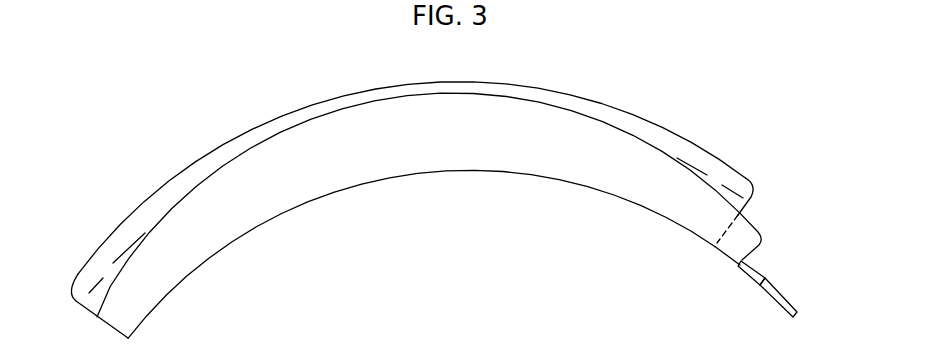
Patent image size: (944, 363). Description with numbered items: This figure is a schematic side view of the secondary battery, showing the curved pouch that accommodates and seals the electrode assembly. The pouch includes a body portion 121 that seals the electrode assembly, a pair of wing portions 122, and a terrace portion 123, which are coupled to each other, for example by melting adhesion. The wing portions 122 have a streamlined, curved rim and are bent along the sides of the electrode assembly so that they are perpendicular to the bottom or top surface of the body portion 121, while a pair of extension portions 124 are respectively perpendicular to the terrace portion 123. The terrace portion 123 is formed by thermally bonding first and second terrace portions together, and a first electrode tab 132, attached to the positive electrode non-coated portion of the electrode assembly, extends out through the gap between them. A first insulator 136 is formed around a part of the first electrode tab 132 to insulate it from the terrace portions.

The body portion 121 is at (463, 80).
The wing portions 122 is at (445, 158).
The terrace portion 123 is at (728, 255).
The extension portions 124 is at (743, 237).
The first electrode tab 132 is at (778, 290).
The first insulator 136 is at (752, 283).